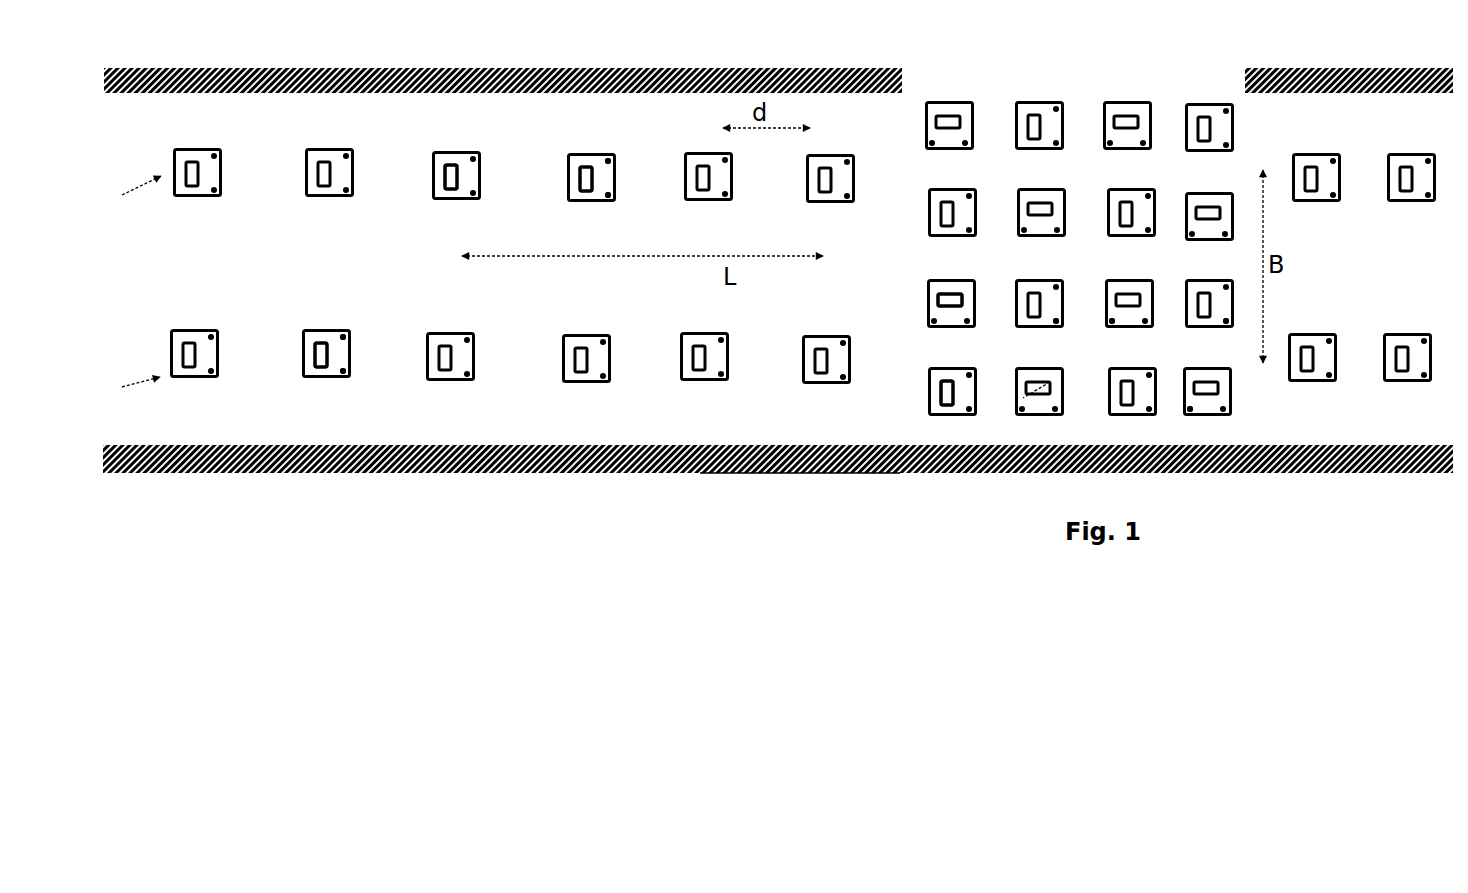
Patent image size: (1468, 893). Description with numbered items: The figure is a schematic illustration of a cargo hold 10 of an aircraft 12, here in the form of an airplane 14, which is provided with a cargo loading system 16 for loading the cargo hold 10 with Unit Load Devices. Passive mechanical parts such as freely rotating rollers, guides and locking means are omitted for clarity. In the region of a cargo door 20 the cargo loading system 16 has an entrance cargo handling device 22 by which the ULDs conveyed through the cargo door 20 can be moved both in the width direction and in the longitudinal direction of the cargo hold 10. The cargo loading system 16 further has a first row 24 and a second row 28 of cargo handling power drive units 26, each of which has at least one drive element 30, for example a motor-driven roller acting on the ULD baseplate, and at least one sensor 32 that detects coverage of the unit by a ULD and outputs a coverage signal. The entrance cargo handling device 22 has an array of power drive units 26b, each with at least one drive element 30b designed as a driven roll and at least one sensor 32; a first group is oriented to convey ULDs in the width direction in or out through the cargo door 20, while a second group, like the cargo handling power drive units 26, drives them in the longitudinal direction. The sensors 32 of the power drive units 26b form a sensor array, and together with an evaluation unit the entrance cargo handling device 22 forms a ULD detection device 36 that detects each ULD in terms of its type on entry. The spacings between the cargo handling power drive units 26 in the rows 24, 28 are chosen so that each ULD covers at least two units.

The cargo hold 10 is at (640, 427).
The aircraft 12 is at (853, 475).
The airplane 14 is at (797, 477).
The cargo loading system 16 is at (467, 405).
The cargo door 20 is at (1083, 271).
The entrance cargo handling device 22 is at (1238, 473).
The first row 24 is at (158, 159).
The cargo handling power drive unit 26 is at (758, 276).
The power drive unit 26b is at (976, 332).
The second row 28 is at (158, 338).
The drive element 30 is at (458, 181).
The drive element 30b is at (940, 370).
The sensor 32 is at (617, 196).
The ULD detection device 36 is at (1155, 439).